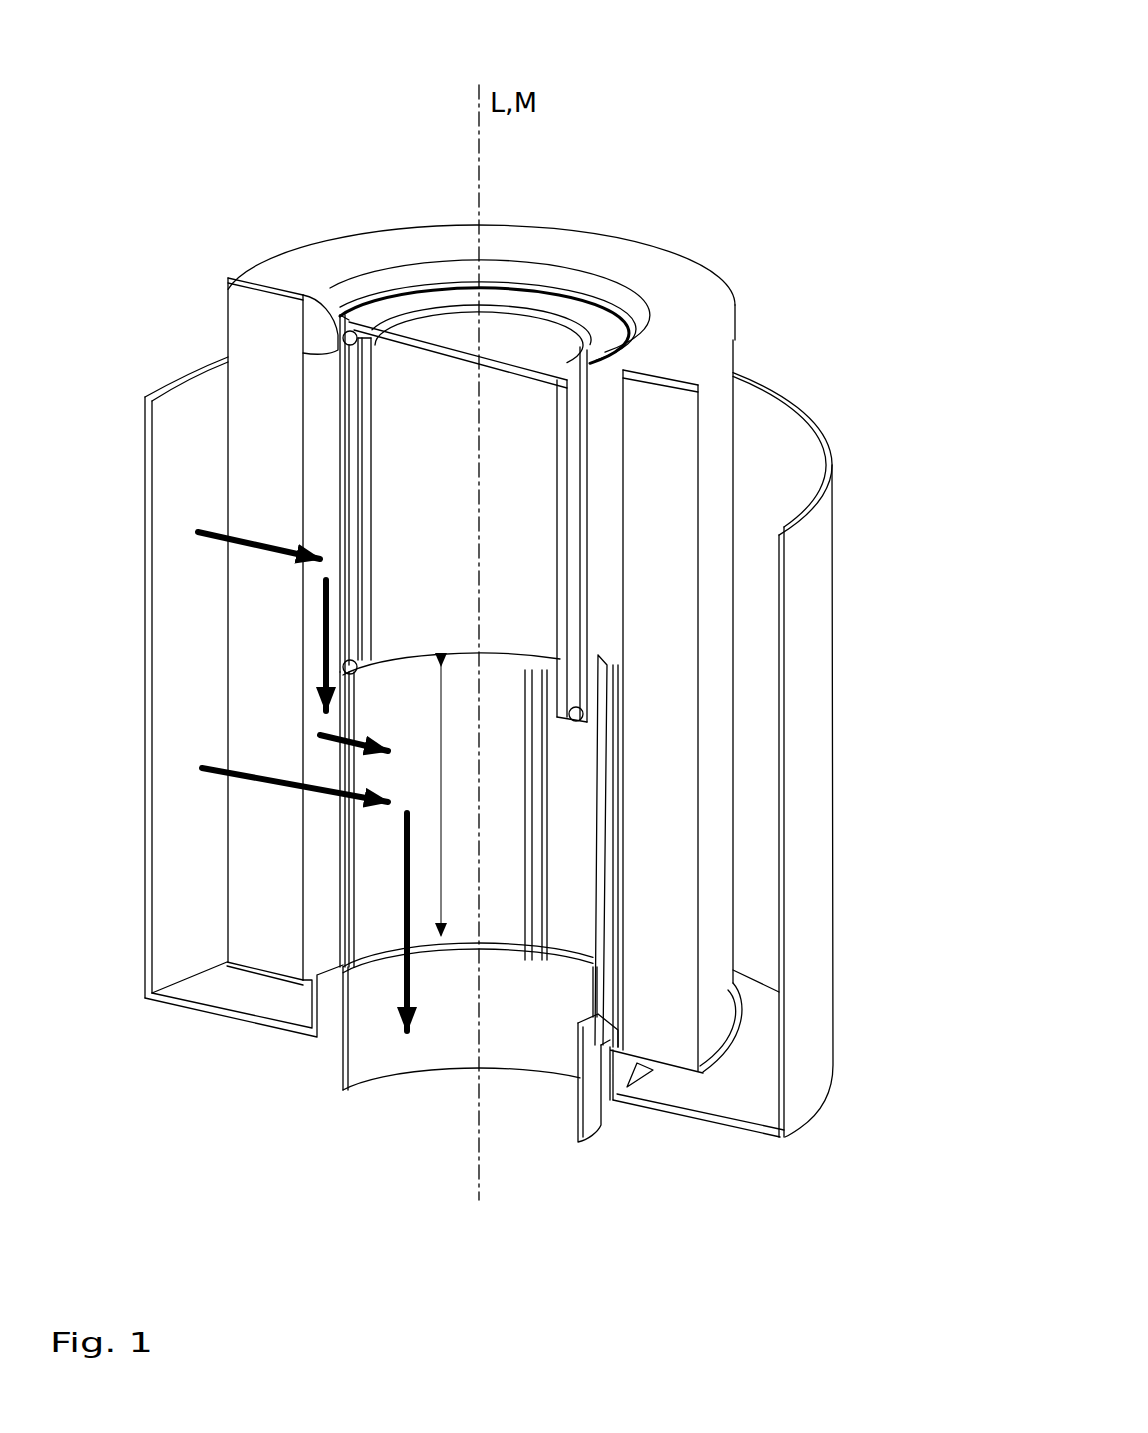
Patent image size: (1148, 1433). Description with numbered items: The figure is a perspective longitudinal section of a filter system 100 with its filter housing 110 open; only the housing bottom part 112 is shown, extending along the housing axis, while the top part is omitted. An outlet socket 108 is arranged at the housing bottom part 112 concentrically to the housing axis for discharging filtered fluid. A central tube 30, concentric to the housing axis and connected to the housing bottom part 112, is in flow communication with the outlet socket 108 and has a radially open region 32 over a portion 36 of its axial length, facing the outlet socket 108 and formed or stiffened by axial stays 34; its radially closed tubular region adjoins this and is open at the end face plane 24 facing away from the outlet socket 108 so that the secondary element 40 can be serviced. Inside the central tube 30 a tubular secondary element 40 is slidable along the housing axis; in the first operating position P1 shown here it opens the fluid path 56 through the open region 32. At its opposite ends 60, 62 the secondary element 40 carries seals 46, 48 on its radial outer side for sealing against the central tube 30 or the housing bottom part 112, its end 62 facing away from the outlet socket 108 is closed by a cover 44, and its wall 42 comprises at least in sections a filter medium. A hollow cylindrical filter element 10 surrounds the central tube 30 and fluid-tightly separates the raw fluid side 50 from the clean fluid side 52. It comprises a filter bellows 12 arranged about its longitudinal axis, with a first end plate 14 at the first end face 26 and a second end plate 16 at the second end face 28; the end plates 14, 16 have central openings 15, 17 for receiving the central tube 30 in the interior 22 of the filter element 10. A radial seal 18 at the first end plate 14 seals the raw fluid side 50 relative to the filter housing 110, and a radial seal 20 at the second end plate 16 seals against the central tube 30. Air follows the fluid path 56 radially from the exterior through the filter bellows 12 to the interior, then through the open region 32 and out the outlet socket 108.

The filter system 100 is at (701, 104).
The filter element 10 is at (698, 385).
The filter bellows 12 is at (723, 448).
The first end plate 14 is at (722, 1057).
The central opening 15 is at (605, 1050).
The second end plate 16 is at (697, 323).
The central opening 17 is at (330, 299).
The seal 18 is at (303, 993).
The seal 20 is at (312, 328).
The interior 22 is at (570, 775).
The end face plane 24 is at (421, 286).
The first end face 26 is at (685, 1080).
The second end face 28 is at (692, 286).
The central tube 30 is at (596, 450).
The radially open region 32 is at (583, 822).
The axial stays 34 is at (343, 872).
The portion of axial length 36 is at (442, 870).
The secondary element 40 is at (367, 418).
The wall 42 is at (367, 578).
The cover 44 is at (515, 335).
The seal 46 is at (357, 661).
The seal 48 is at (356, 343).
The raw fluid side 50 is at (182, 680).
The clean fluid side 52 is at (504, 815).
The fluid path 56 is at (237, 547).
The end 60 is at (512, 670).
The end 62 is at (564, 330).
The outlet socket 108 is at (352, 1092).
The filter housing 110 is at (832, 627).
The housing bottom part 112 is at (832, 967).
The first operating position P1 is at (569, 548).